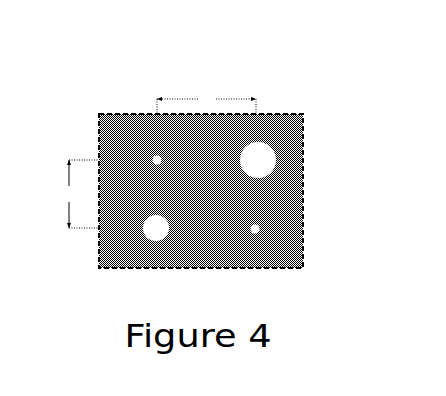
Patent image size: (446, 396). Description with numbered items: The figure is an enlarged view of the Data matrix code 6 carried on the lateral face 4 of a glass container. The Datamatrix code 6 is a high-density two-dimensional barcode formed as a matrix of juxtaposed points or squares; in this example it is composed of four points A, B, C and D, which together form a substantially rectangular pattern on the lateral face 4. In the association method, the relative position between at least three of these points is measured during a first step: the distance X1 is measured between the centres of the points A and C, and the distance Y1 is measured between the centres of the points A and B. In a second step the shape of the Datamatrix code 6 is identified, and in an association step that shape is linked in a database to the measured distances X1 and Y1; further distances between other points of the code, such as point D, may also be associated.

The lateral face 4 is at (262, 254).
The Data matrix code 6 is at (118, 113).
The point A is at (156, 157).
The point B is at (154, 232).
The point C is at (257, 163).
The point D is at (256, 229).
The distance X1 is at (206, 104).
The distance Y1 is at (80, 194).